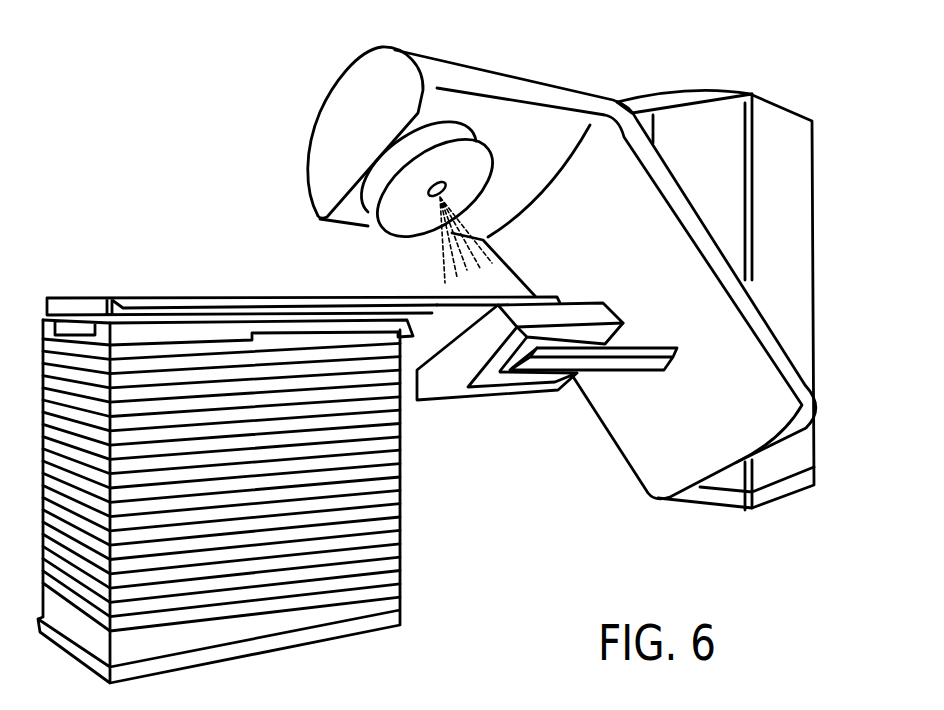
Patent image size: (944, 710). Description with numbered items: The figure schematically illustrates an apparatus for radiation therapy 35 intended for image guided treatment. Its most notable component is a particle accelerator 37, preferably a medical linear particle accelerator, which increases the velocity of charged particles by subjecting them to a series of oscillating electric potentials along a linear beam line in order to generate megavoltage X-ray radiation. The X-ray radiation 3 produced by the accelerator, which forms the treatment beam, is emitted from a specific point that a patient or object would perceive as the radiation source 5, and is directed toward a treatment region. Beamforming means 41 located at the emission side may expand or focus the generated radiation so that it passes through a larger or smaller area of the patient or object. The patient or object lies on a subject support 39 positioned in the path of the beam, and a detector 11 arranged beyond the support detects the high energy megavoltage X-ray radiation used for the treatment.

The X-ray radiation 3 is at (437, 264).
The radiation source 5 is at (447, 182).
The detector 11 is at (488, 337).
The apparatus for radiation therapy 35 is at (146, 137).
The particle accelerator 37 is at (633, 217).
The subject support 39 is at (72, 296).
The beamforming means 41 is at (450, 132).